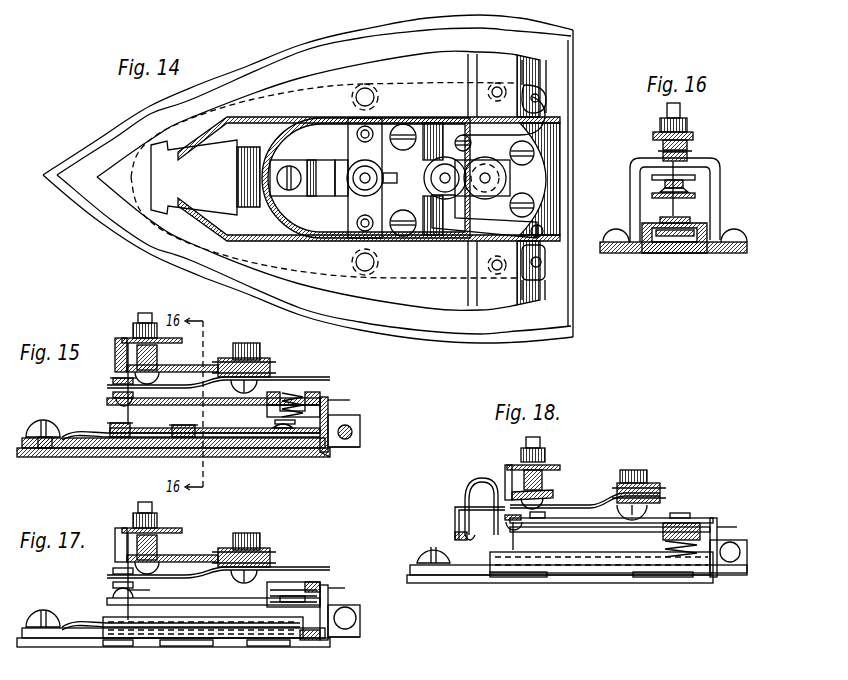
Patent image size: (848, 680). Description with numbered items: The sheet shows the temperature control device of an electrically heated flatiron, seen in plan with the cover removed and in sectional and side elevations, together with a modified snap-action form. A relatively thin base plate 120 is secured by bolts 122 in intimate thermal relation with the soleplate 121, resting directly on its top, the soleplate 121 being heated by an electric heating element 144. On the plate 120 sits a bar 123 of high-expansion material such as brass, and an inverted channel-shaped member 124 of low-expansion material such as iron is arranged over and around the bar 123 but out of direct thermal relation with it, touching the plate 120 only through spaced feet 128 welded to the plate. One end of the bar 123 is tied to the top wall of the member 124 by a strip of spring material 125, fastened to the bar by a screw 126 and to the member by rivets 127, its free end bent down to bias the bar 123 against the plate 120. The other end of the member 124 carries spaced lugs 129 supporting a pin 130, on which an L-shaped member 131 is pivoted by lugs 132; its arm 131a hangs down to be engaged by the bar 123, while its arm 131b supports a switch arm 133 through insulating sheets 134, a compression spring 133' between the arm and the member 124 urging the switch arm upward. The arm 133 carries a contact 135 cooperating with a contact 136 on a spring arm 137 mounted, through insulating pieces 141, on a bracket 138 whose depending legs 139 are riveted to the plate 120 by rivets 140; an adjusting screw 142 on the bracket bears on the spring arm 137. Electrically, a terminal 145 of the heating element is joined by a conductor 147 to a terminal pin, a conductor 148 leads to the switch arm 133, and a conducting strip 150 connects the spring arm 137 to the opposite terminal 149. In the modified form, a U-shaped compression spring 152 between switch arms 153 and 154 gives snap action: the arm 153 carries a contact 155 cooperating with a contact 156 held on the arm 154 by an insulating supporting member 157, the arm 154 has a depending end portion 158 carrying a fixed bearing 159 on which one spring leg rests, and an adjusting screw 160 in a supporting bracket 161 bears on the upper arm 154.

In FIG. 14, the base plate 120 is at (366, 178).
In FIG. 16, the base plate 120 is at (620, 254).
In FIG. 15, the base plate 120 is at (50, 457).
In FIG. 17, the base plate 120 is at (48, 648).
In FIG. 14, the soleplate 121 is at (440, 320).
In FIG. 14, the bolts 122 is at (410, 133).
In FIG. 14, the bar 123 is at (280, 165).
In FIG. 16, the bar 123 is at (668, 254).
In FIG. 15, the bar 123 is at (85, 448).
In FIG. 17, the bar 123 is at (78, 640).
In FIG. 16, the inverted channel-shaped member 124 is at (657, 229).
In FIG. 15, the inverted channel-shaped member 124 is at (212, 428).
In FIG. 17, the inverted channel-shaped member 124 is at (215, 621).
In FIG. 14, the strip of spring material 125 is at (321, 162).
In FIG. 15, the strip of spring material 125 is at (85, 432).
In FIG. 17, the strip of spring material 125 is at (85, 622).
In FIG. 15, the screw 126 is at (40, 420).
In FIG. 17, the screw 126 is at (40, 610).
In FIG. 16, the rivets 127 is at (676, 218).
In FIG. 15, the rivets 127 is at (175, 426).
In FIG. 17, the spaced feet 128 is at (148, 645).
In FIG. 18, the spaced feet 128 is at (535, 580).
In FIG. 17, the spaced lugs 129 is at (352, 609).
In FIG. 14, the pin 130 is at (530, 195).
In FIG. 15, the pin 130 is at (352, 432).
In FIG. 17, the pin 130 is at (345, 638).
In FIG. 15, the L-shaped member 131 is at (328, 397).
In FIG. 17, the L-shaped member 131 is at (328, 585).
In FIG. 15, the downwardly extending arm 131a is at (330, 452).
In FIG. 15, the switch-arm supporting arm 131b is at (285, 392).
In FIG. 17, the switch-arm supporting arm 131b is at (285, 582).
In FIG. 15, the lugs 132 is at (355, 447).
In FIG. 17, the lugs 132 is at (358, 630).
In FIG. 16, the switch arm 133 is at (700, 196).
In FIG. 15, the switch arm 133 is at (213, 393).
In FIG. 17, the switch arm 133 is at (213, 591).
In FIG. 15, the compression spring 133' is at (269, 452).
In FIG. 17, the compression spring 133' is at (297, 653).
In FIG. 15, the insulating sheets 134 is at (300, 392).
In FIG. 17, the insulating sheets 134 is at (300, 582).
In FIG. 16, the contact 135 is at (660, 191).
In FIG. 15, the contact 135 is at (113, 396).
In FIG. 17, the contact 135 is at (113, 586).
In FIG. 16, the contact 136 is at (665, 184).
In FIG. 15, the contact 136 is at (115, 380).
In FIG. 17, the contact 136 is at (115, 570).
In FIG. 16, the spring arm 137 is at (692, 176).
In FIG. 15, the spring arm 137 is at (180, 383).
In FIG. 17, the spring arm 137 is at (180, 573).
In FIG. 16, the bracket 138 is at (702, 162).
In FIG. 15, the bracket 138 is at (208, 364).
In FIG. 17, the bracket 138 is at (208, 554).
In FIG. 16, the depending legs 139 is at (720, 185).
In FIG. 15, the depending legs 139 is at (115, 425).
In FIG. 17, the depending legs 139 is at (155, 590).
In FIG. 16, the rivets 140 is at (609, 236).
In FIG. 15, the insulating pieces 141 is at (276, 366).
In FIG. 17, the insulating pieces 141 is at (270, 548).
In FIG. 14, the adjusting screw 142 is at (375, 171).
In FIG. 16, the adjusting screw 142 is at (665, 149).
In FIG. 15, the adjusting screw 142 is at (135, 342).
In FIG. 17, the adjusting screw 142 is at (135, 532).
In FIG. 14, the electric heating element 144 is at (388, 82).
In FIG. 14, the terminal 145 is at (540, 94).
In FIG. 14, the conductor 147 is at (532, 133).
In FIG. 14, the conductor 148 is at (542, 233).
In FIG. 14, the terminal 149 is at (541, 264).
In FIG. 14, the conducting strip 150 is at (483, 228).
In FIG. 18, the U-shaped compression spring 152 is at (472, 482).
In FIG. 18, the switch arm 153 is at (604, 533).
In FIG. 18, the switch arm 154 is at (562, 505).
In FIG. 18, the contact 155 is at (516, 530).
In FIG. 18, the contact 156 is at (505, 525).
In FIG. 18, the insulating supporting member 157 is at (540, 512).
In FIG. 18, the depending end portion 158 is at (450, 514).
In FIG. 18, the fixed bearing 159 is at (462, 540).
In FIG. 18, the adjusting screw 160 is at (525, 452).
In FIG. 18, the supporting bracket 161 is at (598, 490).